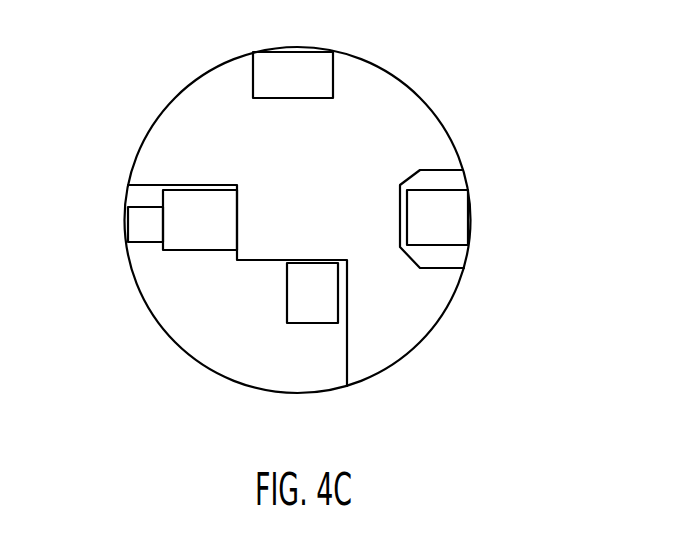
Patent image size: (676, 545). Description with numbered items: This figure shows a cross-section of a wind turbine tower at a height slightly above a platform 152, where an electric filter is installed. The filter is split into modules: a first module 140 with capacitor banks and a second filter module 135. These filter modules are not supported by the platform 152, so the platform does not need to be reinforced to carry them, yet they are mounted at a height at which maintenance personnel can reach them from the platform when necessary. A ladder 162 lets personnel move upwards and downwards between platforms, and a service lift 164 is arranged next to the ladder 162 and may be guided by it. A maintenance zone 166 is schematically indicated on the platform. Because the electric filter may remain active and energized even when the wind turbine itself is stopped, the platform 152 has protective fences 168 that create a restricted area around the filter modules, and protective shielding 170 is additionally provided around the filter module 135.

The second filter module 135 is at (452, 213).
The first module 140 is at (327, 80).
The platform 152 is at (188, 128).
The ladder 162 is at (145, 229).
The service lift 164 is at (193, 242).
The maintenance zone 166 is at (310, 308).
The protective fences 168 is at (347, 347).
The protective shielding 170 is at (440, 170).